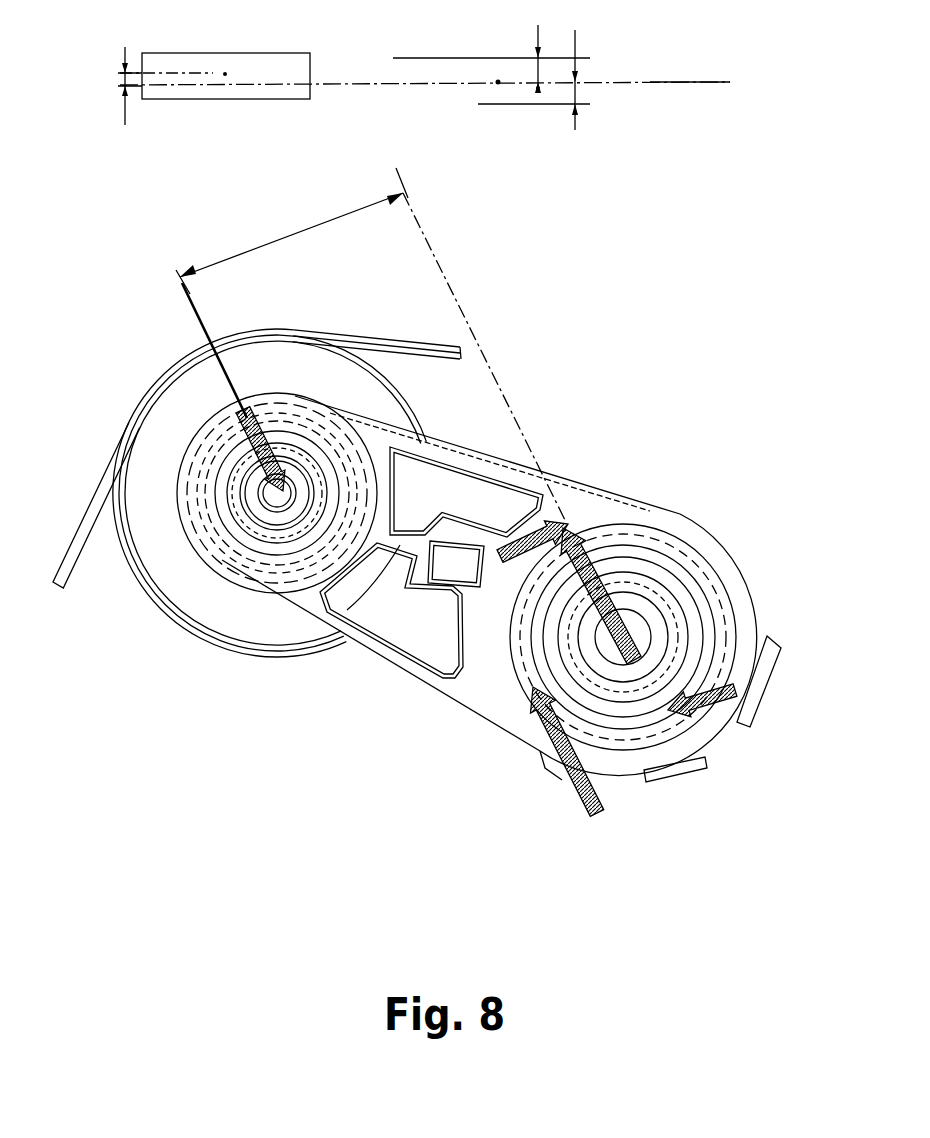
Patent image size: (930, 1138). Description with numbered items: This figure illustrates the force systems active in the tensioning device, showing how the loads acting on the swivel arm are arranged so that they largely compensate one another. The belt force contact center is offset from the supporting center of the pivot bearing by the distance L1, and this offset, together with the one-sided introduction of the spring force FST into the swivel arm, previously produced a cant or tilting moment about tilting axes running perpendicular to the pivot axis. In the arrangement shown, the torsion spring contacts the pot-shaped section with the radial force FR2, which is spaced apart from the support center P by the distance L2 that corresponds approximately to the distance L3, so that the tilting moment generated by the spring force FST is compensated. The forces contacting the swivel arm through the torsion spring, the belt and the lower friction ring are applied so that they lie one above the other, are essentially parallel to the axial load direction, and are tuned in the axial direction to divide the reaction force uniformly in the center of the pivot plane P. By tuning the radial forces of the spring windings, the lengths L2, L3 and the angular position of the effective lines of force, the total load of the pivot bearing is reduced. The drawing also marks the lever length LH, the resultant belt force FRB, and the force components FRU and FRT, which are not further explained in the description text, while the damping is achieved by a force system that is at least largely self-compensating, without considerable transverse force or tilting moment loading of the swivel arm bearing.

The distance L1 is at (110, 91).
The distance L2 is at (598, 87).
The distance L3 is at (517, 59).
The support center (pivot plane) P is at (688, 82).
The lever arm length between pulley axis and pivot axis LH is at (370, 344).
The resultant belt force on tensioning pulley FRB is at (243, 437).
The reaction force component FRU is at (513, 540).
The radial force FR2 is at (625, 596).
The tangential reaction force FRT is at (720, 707).
The spring force FST is at (580, 797).